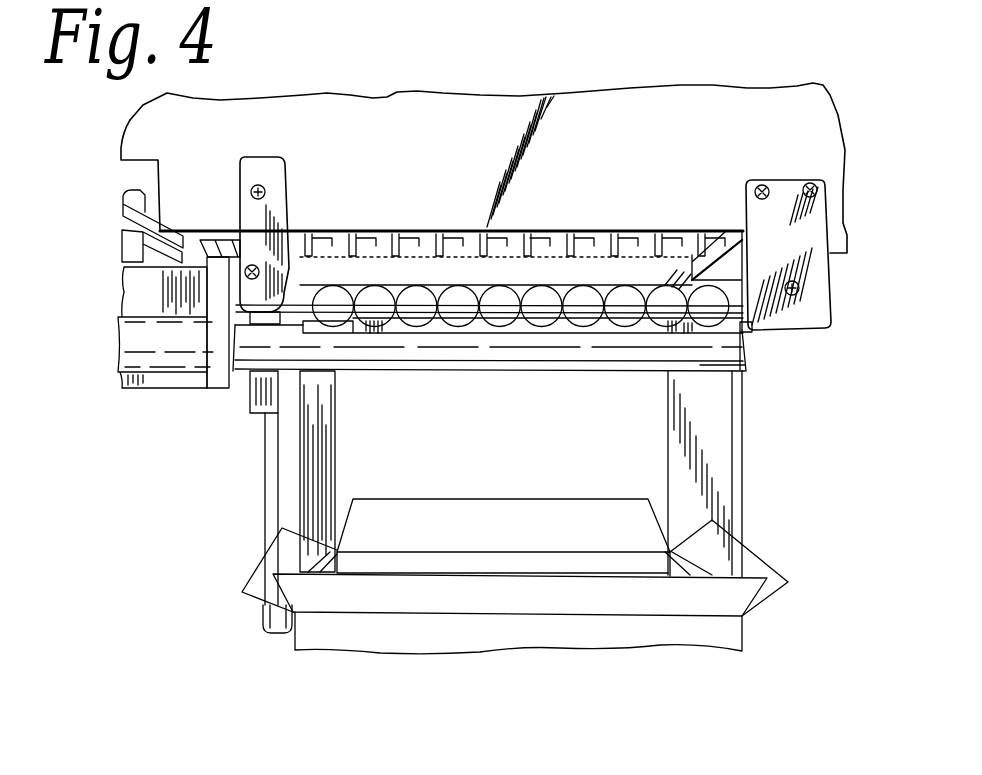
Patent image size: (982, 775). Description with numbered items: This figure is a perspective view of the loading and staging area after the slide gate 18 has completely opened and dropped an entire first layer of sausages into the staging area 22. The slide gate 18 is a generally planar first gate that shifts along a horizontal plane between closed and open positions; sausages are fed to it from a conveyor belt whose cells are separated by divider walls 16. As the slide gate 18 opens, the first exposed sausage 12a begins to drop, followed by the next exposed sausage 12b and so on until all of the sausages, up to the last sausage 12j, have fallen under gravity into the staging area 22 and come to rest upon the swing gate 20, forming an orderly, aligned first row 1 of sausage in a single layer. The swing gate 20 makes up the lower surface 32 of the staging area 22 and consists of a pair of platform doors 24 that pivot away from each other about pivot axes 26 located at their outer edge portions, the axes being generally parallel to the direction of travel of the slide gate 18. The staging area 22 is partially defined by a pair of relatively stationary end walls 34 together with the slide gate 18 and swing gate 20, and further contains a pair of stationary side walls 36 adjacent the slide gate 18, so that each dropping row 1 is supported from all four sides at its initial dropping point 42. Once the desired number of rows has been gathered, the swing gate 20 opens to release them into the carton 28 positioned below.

The first row of sausages 1 is at (178, 461).
The first exposed sausage 12a is at (336, 299).
The next exposed sausage 12b is at (376, 297).
The last sausage 12j is at (756, 344).
The divider walls 16 is at (438, 257).
The slide gate 18 is at (712, 257).
The swing gate 20 is at (750, 354).
The staging area 22 is at (627, 272).
The platform doors 24 is at (378, 318).
The pivot axes 26 is at (727, 358).
The carton 28 is at (723, 637).
The lower surface 32 is at (347, 318).
The end walls 34 is at (312, 530).
The side walls 36 is at (292, 272).
The initial dropping point 42 is at (290, 287).